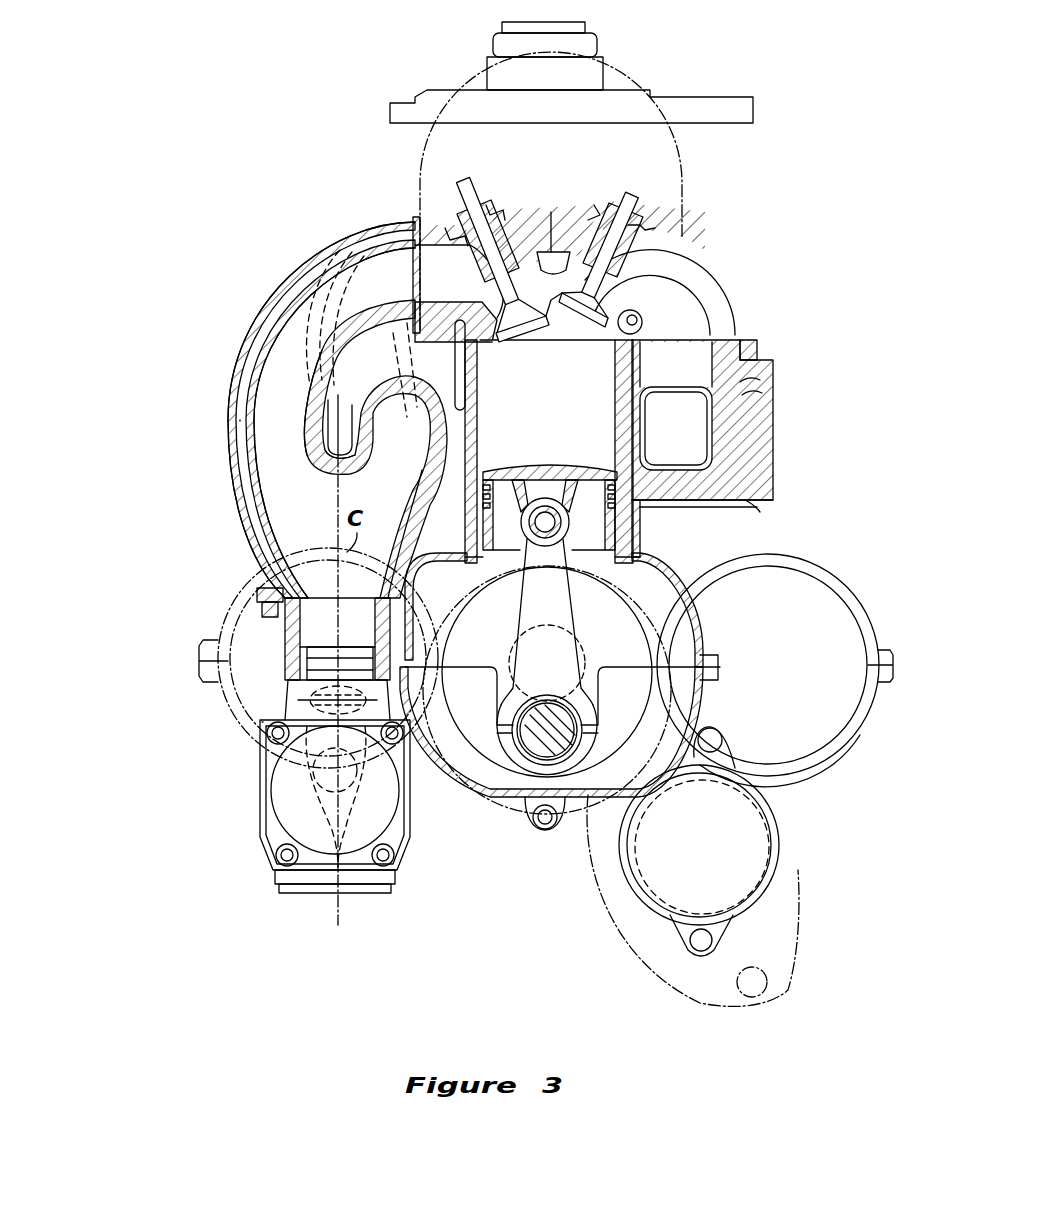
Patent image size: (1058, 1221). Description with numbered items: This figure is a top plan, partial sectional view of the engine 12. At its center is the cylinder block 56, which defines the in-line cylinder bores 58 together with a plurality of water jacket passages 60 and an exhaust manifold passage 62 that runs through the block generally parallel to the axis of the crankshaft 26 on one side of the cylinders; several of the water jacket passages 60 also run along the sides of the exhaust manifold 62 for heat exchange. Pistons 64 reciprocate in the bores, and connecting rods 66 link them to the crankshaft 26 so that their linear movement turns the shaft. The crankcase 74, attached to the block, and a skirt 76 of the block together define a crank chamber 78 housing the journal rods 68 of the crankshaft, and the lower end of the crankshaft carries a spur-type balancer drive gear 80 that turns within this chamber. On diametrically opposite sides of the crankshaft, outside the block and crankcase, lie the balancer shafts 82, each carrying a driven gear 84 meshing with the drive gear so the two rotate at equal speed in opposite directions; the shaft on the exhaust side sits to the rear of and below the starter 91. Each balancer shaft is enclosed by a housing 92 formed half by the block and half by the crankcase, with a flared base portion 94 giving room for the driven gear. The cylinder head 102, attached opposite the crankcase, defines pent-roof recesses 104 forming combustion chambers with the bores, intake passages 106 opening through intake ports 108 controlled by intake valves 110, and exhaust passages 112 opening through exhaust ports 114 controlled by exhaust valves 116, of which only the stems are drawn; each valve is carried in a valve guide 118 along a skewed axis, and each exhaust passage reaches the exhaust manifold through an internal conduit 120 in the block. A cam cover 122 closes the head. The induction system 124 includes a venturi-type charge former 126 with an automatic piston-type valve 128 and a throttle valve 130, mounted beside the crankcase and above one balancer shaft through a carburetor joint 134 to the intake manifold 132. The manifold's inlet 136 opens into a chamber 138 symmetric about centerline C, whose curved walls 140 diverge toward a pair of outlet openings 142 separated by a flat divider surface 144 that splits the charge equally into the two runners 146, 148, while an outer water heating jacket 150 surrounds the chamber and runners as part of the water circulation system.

The engine 12 is at (722, 176).
The crankshaft 26 is at (510, 777).
The cylinder block 56 is at (787, 310).
The cylinder bores 58 is at (612, 385).
The water jacket passages 60 is at (790, 518).
The exhaust manifold passage 62 is at (762, 448).
The pistons 64 is at (517, 465).
The connecting rods 66 is at (570, 597).
The journal rods 68 is at (670, 777).
The crankcase 74 is at (580, 800).
The skirt 76 is at (655, 568).
The crank chamber 78 is at (576, 803).
The balancer drive gear 80 is at (438, 802).
The balancer shaft 82 is at (860, 570).
The driven gear 84 is at (838, 778).
The starter 91 is at (783, 815).
The housing 92 is at (880, 633).
The flared base portion 94 is at (855, 745).
The cylinder head 102 is at (667, 235).
The recesses 104 is at (562, 332).
The intake passages 106 is at (350, 266).
The intake port 108 is at (412, 228).
The intake valve 110 is at (475, 185).
The exhaust passages 112 is at (678, 290).
The exhaust port 114 is at (688, 262).
The exhaust valve 116 is at (633, 192).
The valve guide 118 is at (462, 254).
The internal conduit 120 is at (697, 355).
The cam cover 122 is at (413, 142).
The induction system 124 is at (120, 652).
The charge former 126 is at (263, 868).
The piston-type valve 128 is at (340, 898).
The throttle valve 130 is at (298, 700).
The intake manifold 132 is at (274, 264).
The carburetor joint 134 is at (230, 660).
The inlet 136 is at (263, 567).
The chamber 138 is at (232, 520).
The curved walls 140 is at (278, 528).
The outlet openings 142 is at (263, 422).
The flat divider surface 144 is at (323, 473).
The runner 146 is at (228, 380).
The runner 148 is at (300, 328).
The outer water heating jacket 150 is at (240, 340).